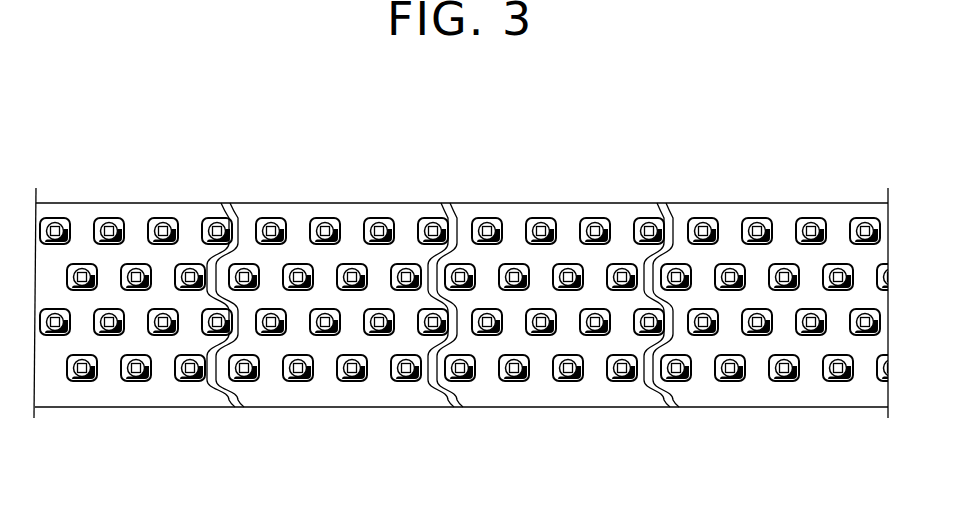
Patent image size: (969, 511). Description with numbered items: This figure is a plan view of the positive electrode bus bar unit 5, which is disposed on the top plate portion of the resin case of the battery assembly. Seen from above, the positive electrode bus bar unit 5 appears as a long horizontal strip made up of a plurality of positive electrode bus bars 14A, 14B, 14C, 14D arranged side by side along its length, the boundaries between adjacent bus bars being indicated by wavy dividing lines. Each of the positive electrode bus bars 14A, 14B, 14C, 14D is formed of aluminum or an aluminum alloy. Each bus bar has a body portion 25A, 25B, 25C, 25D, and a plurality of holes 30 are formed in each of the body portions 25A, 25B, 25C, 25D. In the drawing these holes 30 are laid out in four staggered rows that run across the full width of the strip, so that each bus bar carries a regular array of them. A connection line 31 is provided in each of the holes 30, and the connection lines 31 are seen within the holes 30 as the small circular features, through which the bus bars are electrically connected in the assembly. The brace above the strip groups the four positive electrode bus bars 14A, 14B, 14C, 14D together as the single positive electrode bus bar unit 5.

The positive electrode bus bar unit 5 is at (67, 127).
The positive electrode bus bar 14A is at (133, 232).
The body portion 25A is at (136, 259).
The positive electrode bus bar 14B is at (350, 232).
The body portion 25B is at (338, 301).
The positive electrode bus bar 14C is at (565, 232).
The body portion 25C is at (554, 259).
The positive electrode bus bar 14D is at (781, 232).
The body portion 25D is at (784, 259).
The hole 30 is at (343, 381).
The connection line 31 is at (401, 377).